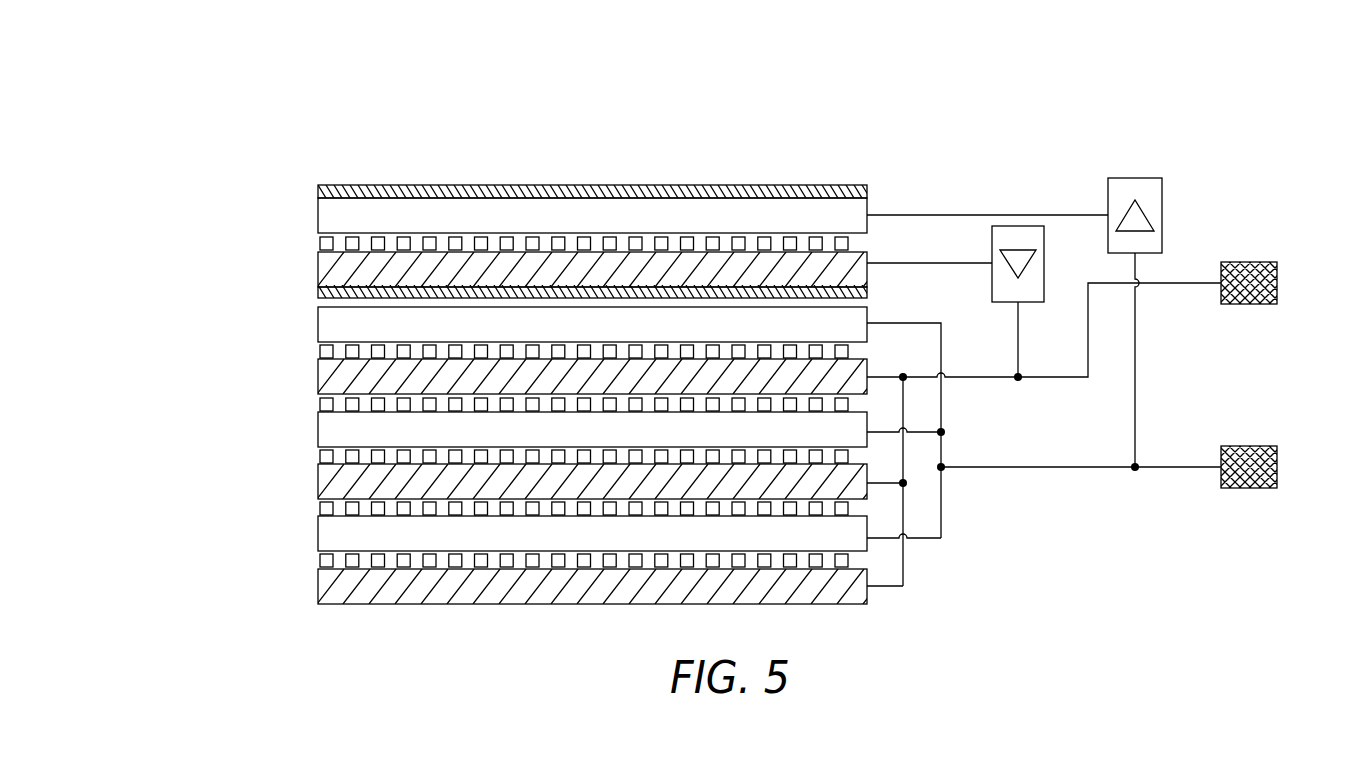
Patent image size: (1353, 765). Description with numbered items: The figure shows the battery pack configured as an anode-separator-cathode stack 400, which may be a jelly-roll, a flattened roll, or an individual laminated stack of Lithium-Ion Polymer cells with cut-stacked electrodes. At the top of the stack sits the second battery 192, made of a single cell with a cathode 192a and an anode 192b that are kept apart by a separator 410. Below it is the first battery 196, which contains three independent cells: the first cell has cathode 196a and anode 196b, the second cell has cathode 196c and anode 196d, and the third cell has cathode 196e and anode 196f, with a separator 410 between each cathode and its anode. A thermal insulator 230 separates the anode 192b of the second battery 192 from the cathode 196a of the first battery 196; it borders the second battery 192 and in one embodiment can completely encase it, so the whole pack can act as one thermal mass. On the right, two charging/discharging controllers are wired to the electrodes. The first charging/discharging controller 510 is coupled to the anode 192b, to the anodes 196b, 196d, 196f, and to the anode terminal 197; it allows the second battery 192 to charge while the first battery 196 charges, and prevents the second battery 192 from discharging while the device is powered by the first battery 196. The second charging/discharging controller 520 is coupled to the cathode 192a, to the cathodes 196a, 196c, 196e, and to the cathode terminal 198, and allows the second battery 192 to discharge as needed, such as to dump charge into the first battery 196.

The anode-separator-cathode stack 400 is at (1229, 97).
The second battery 192 is at (222, 298).
The first battery 196 is at (222, 610).
The thermal insulator 230 is at (318, 191).
The cathode 192a is at (318, 216).
The anode 192b is at (318, 270).
The separator 410 is at (320, 243).
The cathode 196a is at (318, 324).
The anode 196b is at (318, 378).
The cathode 196c is at (318, 432).
The anode 196d is at (318, 483).
The cathode 196e is at (318, 536).
The anode 196f is at (318, 586).
The first charging/discharging controller 510 is at (1044, 263).
The second charging/discharging controller 520 is at (1150, 178).
The anode terminal 197 is at (1263, 262).
The cathode terminal 198 is at (1263, 446).